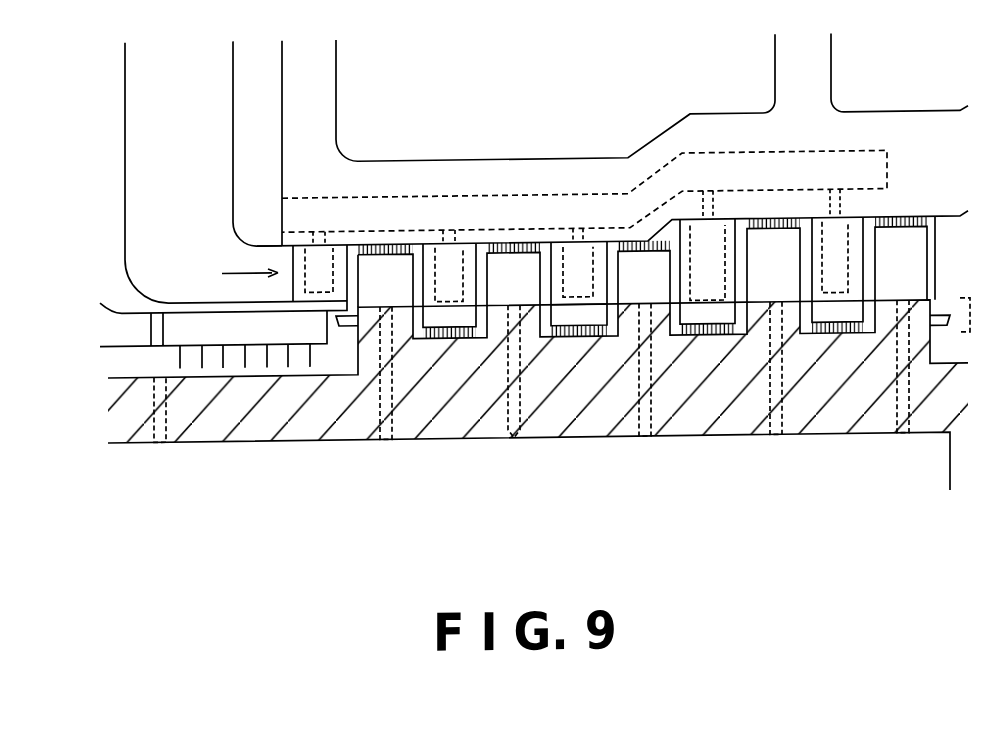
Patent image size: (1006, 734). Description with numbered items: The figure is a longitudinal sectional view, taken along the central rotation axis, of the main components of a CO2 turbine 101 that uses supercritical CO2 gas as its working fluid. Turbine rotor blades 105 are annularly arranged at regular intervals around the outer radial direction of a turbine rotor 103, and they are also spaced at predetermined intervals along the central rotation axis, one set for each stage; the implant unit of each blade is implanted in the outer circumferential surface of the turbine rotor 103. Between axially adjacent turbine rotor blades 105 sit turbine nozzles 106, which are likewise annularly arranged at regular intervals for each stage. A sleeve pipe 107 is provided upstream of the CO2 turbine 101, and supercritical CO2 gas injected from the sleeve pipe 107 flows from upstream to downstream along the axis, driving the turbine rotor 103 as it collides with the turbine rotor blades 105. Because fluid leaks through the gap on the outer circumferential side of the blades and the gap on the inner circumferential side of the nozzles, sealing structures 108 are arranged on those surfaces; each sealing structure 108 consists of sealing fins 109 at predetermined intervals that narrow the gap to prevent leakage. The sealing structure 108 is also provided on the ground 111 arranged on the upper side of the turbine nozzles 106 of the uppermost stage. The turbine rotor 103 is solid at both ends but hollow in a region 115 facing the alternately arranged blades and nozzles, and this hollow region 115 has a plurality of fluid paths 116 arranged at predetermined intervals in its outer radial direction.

The CO2 turbine 101 is at (288, 459).
The turbine rotor 103 is at (343, 408).
The turbine rotor blades 105 is at (527, 272).
The turbine nozzles 106 is at (577, 314).
The sleeve pipe 107 is at (176, 148).
The sealing structure 108 is at (453, 324).
The sealing fins 109 is at (230, 349).
The ground 111 is at (215, 324).
The hollow region 115 is at (445, 444).
The fluid paths 116 is at (516, 445).